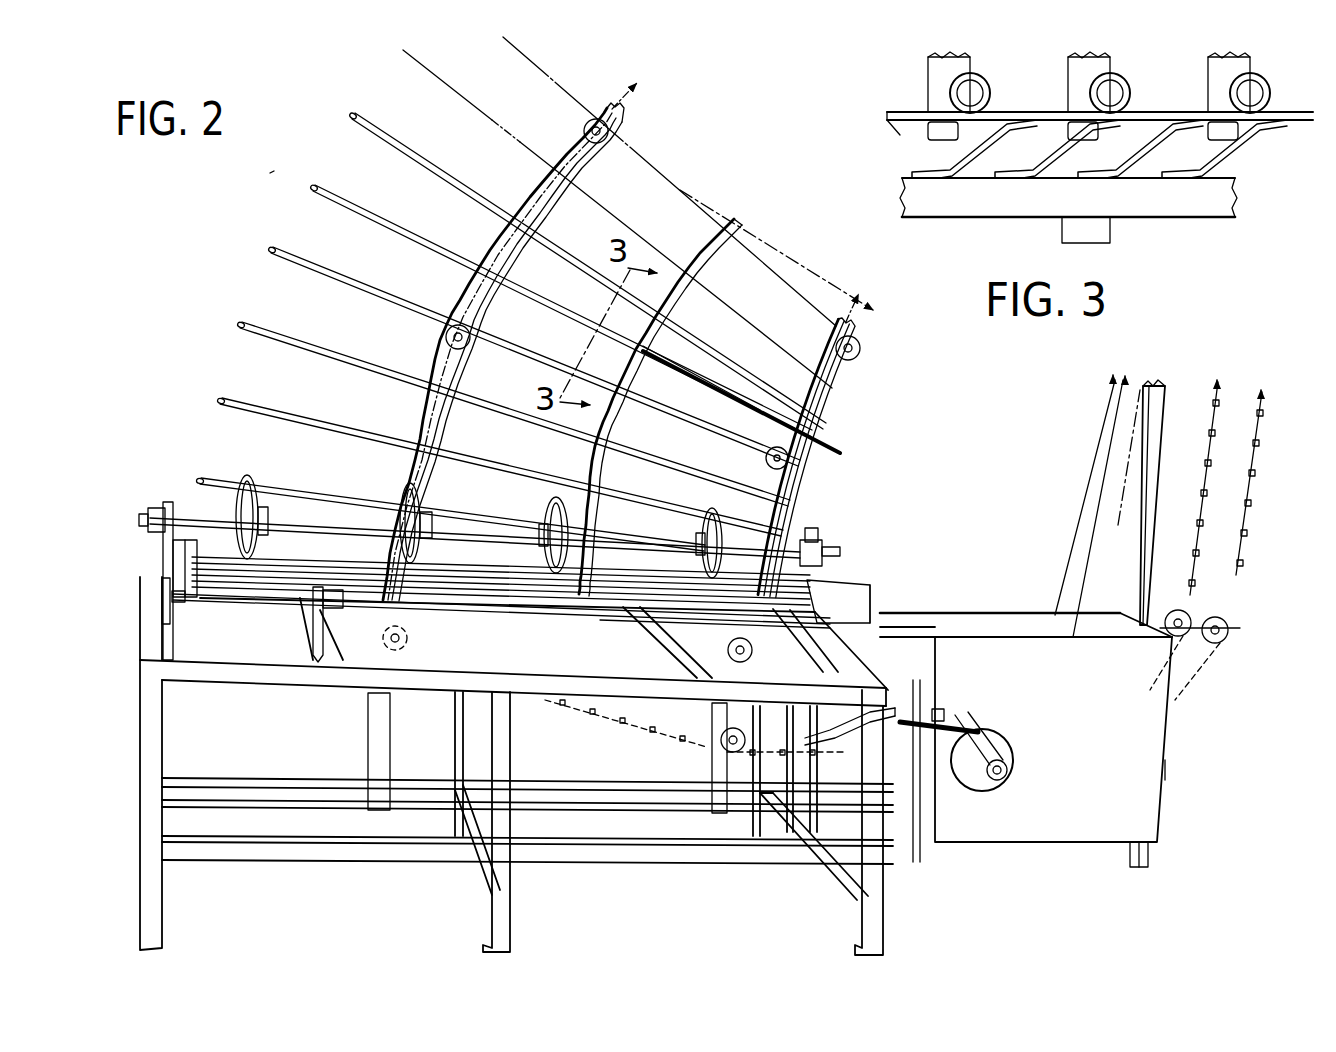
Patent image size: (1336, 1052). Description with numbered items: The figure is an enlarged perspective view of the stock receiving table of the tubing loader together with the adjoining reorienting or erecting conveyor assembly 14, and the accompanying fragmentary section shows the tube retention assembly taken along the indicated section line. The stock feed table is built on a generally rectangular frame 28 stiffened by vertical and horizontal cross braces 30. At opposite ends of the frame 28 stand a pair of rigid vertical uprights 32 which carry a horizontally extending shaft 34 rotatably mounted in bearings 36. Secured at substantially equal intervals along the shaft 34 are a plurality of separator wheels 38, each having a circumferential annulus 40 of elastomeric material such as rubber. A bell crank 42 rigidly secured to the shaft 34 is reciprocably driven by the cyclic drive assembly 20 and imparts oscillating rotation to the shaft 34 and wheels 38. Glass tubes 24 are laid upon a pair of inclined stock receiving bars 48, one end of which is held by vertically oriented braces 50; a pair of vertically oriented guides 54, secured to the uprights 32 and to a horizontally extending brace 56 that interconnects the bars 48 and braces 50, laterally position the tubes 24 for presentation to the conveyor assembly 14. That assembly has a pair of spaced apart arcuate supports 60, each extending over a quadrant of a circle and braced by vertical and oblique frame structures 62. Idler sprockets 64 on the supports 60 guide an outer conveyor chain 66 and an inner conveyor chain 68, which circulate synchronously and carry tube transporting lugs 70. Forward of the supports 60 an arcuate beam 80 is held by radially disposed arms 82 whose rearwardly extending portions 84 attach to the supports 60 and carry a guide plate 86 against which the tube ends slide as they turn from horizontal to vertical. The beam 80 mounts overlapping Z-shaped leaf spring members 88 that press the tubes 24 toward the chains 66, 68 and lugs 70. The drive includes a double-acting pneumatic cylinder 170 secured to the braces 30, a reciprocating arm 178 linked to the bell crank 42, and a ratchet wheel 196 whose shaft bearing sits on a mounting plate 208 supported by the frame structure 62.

In FIG. 2, the reorienting or erecting conveyor assembly 14 is at (275, 171).
In FIG. 2, the cyclic drive assembly 20 is at (1168, 769).
In FIG. 2, the glass tubes 24 is at (961, 563).
In FIG. 2, the rectangular frame 28 is at (160, 666).
In FIG. 2, the cross braces 30 is at (512, 650).
In FIG. 2, the vertical uprights 32 is at (182, 553).
In FIG. 2, the shaft 34 is at (193, 512).
In FIG. 2, the bearings 36 is at (150, 517).
In FIG. 2, the separator wheels 38 is at (334, 500).
In FIG. 2, the circumferential annulus 40 is at (556, 500).
In FIG. 2, the bell crank 42 is at (842, 553).
In FIG. 2, the stock receiving bars 48 is at (650, 624).
In FIG. 2, the vertically oriented braces 50 is at (306, 627).
In FIG. 2, the vertically oriented guides 54 is at (155, 579).
In FIG. 2, the horizontally extending brace 56 is at (217, 598).
In FIG. 2, the arcuate supports 60 is at (752, 459).
In FIG. 2, the frame structures 62 is at (1138, 560).
In FIG. 2, the idler sprockets 64 is at (465, 348).
In FIG. 2, the outer conveyor chain 66 is at (487, 254).
In FIG. 2, the inner conveyor chain 68 is at (797, 377).
In FIG. 2, the tube transporting lugs 70 is at (1252, 458).
In FIG. 2, the arcuate beam 80 is at (739, 217).
In FIG. 3, the arcuate beam 80 is at (1203, 215).
In FIG. 2, the radially disposed arms 82 is at (717, 350).
In FIG. 2, the rearwardly extending portion 84 is at (843, 452).
In FIG. 2, the guide plate 86 is at (813, 467).
In FIG. 3, the leaf spring members 88 is at (1230, 153).
In FIG. 2, the double-acting pneumatic cylinder 170 is at (917, 705).
In FIG. 2, the reciprocating arm 178 is at (905, 745).
In FIG. 2, the ratchet wheel 196 is at (1000, 745).
In FIG. 2, the mounting plate 208 is at (1172, 731).